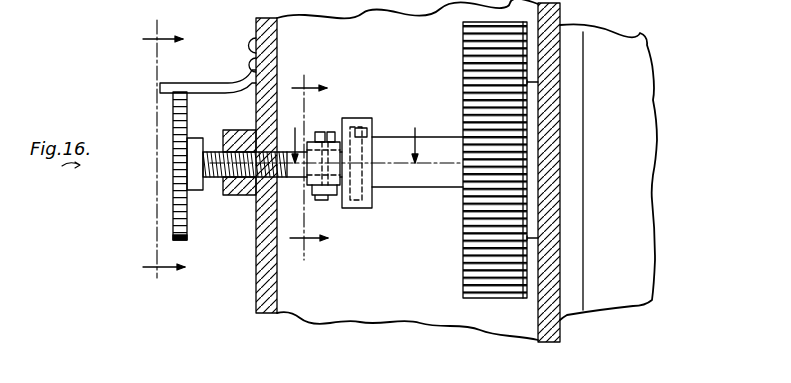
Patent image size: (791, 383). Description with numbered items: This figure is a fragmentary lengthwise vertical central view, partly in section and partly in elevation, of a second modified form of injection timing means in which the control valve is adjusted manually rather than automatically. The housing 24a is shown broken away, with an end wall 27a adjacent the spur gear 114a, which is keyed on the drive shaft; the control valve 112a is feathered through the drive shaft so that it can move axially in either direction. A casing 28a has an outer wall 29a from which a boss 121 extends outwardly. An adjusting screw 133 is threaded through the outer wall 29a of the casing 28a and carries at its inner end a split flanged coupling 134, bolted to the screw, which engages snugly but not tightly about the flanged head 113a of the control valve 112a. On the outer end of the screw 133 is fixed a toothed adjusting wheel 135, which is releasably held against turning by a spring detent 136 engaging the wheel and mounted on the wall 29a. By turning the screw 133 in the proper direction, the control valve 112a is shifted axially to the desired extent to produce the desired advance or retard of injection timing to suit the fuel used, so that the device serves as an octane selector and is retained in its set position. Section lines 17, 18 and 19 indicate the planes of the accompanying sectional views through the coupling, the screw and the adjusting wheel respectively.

The section line 17- 17 is at (356, 134).
The section line 18- 18 is at (309, 164).
The section line 19- 19 is at (149, 149).
The housing member 24a is at (627, 87).
The end wall 27a is at (554, 243).
The housing or casing 28a is at (303, 32).
The outer wall 29a is at (262, 303).
The control valve 112a is at (427, 187).
The flanged head 113a is at (358, 126).
The spur gear 114a is at (485, 285).
The boss 121 is at (235, 194).
The adjusting screw 133 is at (214, 151).
The split flanged coupling 134 is at (352, 210).
The toothed adjusting wheel 135 is at (180, 213).
The spring detent 136 is at (168, 83).